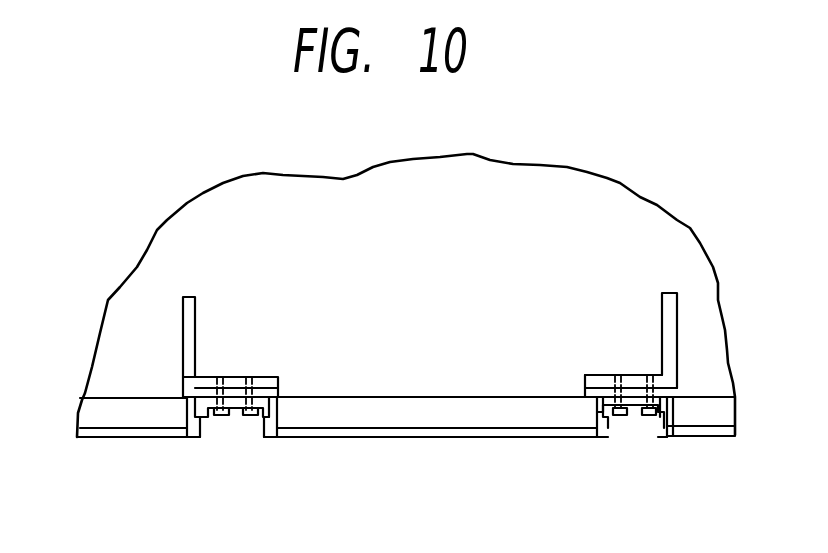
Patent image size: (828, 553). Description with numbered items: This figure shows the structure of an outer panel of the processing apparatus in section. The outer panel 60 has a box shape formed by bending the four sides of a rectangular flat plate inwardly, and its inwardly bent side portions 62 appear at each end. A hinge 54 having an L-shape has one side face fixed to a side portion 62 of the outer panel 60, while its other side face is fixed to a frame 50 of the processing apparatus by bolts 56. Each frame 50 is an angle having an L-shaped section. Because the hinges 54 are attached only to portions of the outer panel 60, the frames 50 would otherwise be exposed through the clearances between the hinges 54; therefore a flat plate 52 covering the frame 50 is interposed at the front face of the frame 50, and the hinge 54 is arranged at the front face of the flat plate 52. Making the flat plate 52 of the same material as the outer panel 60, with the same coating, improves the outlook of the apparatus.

The frame 50 is at (195, 297).
The flat plate 52 is at (265, 392).
The hinge 54 is at (206, 422).
The bolt 56 is at (249, 418).
The outer panel 60 is at (137, 431).
The side portion 62 is at (590, 410).